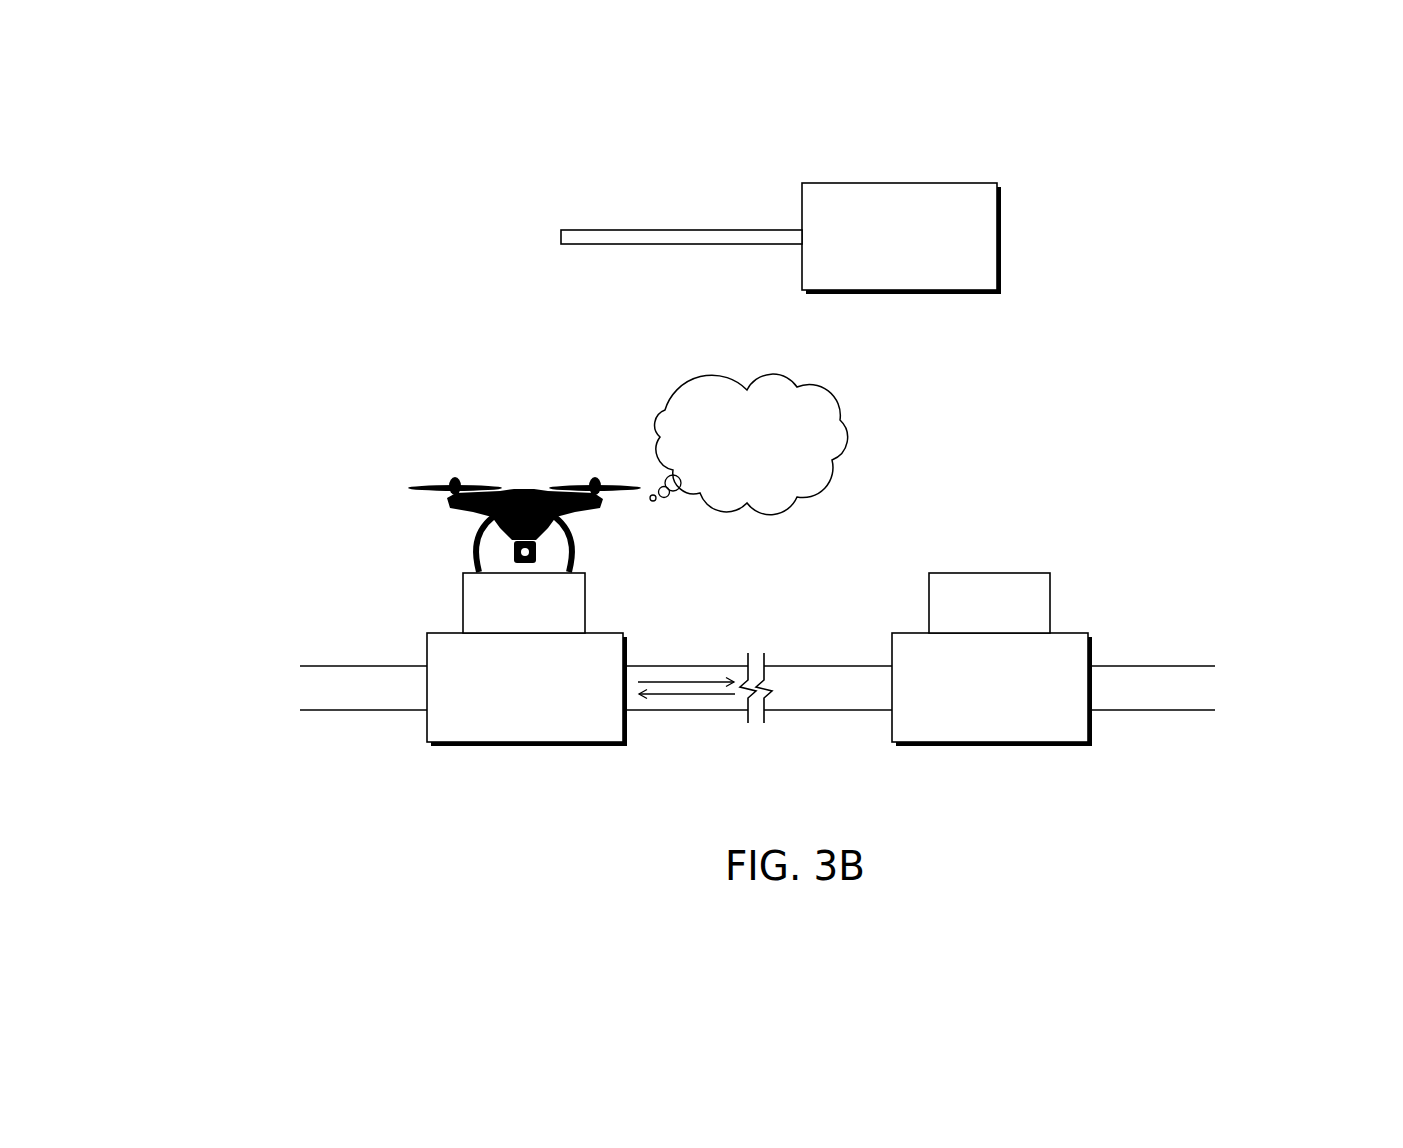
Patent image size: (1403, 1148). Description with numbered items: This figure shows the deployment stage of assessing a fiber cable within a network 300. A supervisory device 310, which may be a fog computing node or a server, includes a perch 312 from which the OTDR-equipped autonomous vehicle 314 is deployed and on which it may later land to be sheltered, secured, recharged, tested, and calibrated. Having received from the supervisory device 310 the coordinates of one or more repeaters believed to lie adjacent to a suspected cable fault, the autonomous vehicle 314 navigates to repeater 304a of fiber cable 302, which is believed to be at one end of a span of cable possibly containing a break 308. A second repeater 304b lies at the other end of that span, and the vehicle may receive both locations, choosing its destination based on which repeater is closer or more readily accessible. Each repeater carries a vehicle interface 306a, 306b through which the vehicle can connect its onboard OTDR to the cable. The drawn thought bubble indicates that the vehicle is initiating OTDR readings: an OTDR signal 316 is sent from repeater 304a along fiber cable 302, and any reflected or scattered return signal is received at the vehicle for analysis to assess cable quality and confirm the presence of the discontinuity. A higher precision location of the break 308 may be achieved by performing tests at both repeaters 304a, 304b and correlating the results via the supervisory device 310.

The network 300 is at (1256, 129).
The fiber cable 302 is at (807, 715).
The repeater 304a is at (503, 712).
The repeater 304b is at (968, 712).
The vehicle interface 306a is at (459, 581).
The vehicle interface 306b is at (1055, 581).
The break 308 is at (755, 639).
The supervisory device 310 is at (883, 272).
The perch 312 is at (582, 251).
The autonomous vehicle 314 is at (446, 482).
The OTDR signal 316 is at (676, 702).